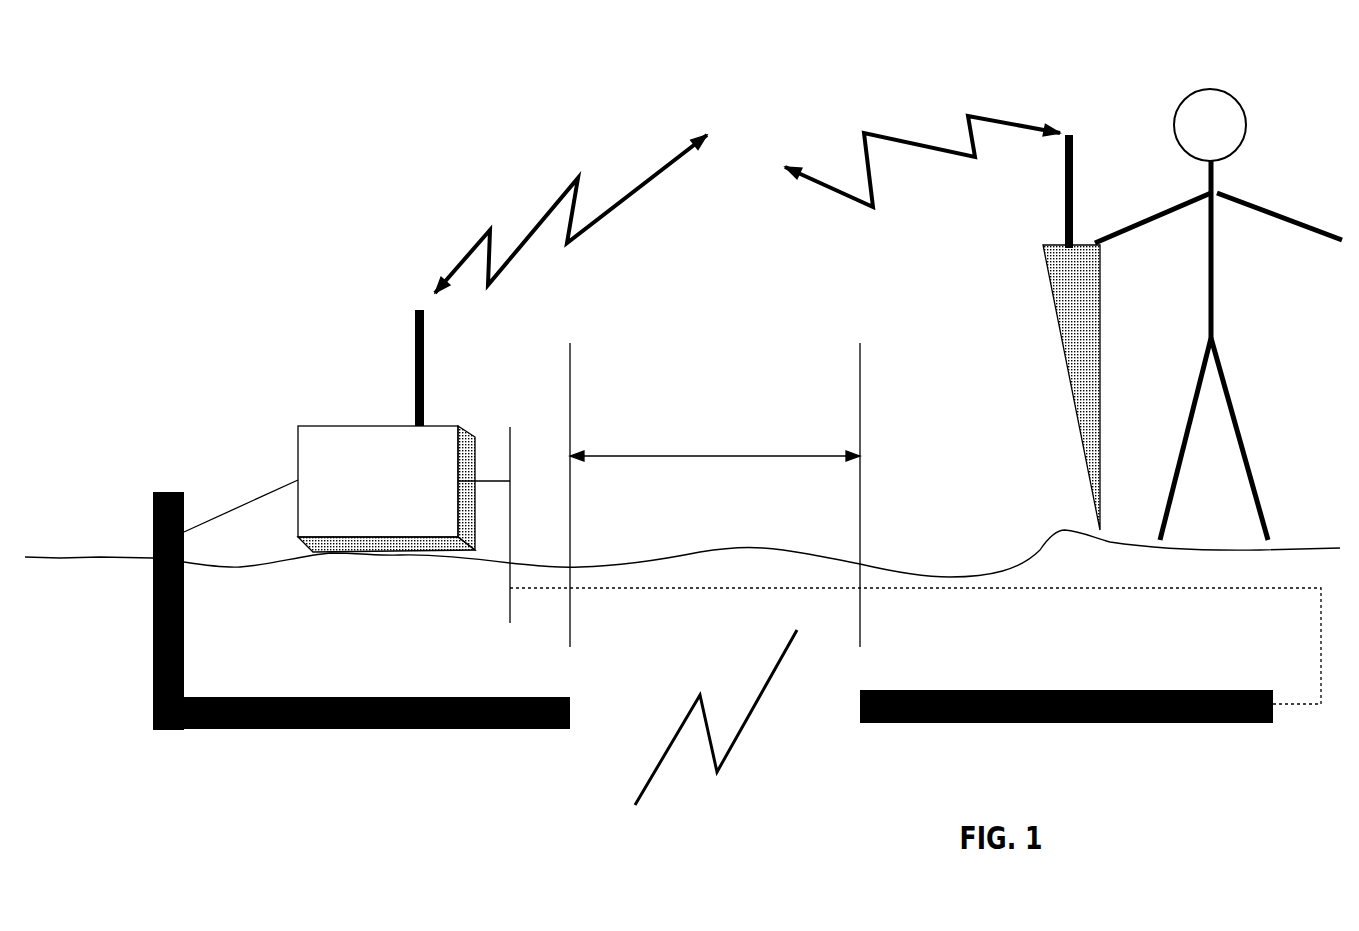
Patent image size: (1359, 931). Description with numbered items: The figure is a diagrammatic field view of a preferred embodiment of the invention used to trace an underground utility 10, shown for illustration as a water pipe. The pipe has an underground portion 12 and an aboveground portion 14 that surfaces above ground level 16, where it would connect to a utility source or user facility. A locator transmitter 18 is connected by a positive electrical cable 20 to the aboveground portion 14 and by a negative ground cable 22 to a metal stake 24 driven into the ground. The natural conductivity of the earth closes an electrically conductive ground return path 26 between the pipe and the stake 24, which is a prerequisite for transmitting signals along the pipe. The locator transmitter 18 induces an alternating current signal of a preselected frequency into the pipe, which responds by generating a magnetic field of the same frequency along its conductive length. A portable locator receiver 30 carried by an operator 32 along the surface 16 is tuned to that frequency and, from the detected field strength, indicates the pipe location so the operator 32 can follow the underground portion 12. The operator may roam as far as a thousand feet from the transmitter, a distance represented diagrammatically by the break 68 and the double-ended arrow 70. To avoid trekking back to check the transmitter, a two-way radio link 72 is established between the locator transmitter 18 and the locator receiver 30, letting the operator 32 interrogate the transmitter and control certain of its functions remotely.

The underground utility 10 is at (675, 537).
The underground portion 12 is at (266, 697).
The aboveground portion 14 is at (153, 522).
The ground level 16 is at (92, 555).
The locator transmitter 18 is at (347, 463).
The positive electrical cable 20 is at (238, 503).
The negative ground cable 22 is at (490, 480).
The metal stake 24 is at (512, 538).
The ground return path 26 is at (1105, 588).
The portable locator receiver 30 is at (1060, 333).
The operator 32 is at (1175, 100).
The break 68 is at (673, 735).
The double-ended arrow 70 is at (648, 455).
The two-way radio link 72 is at (747, 127).